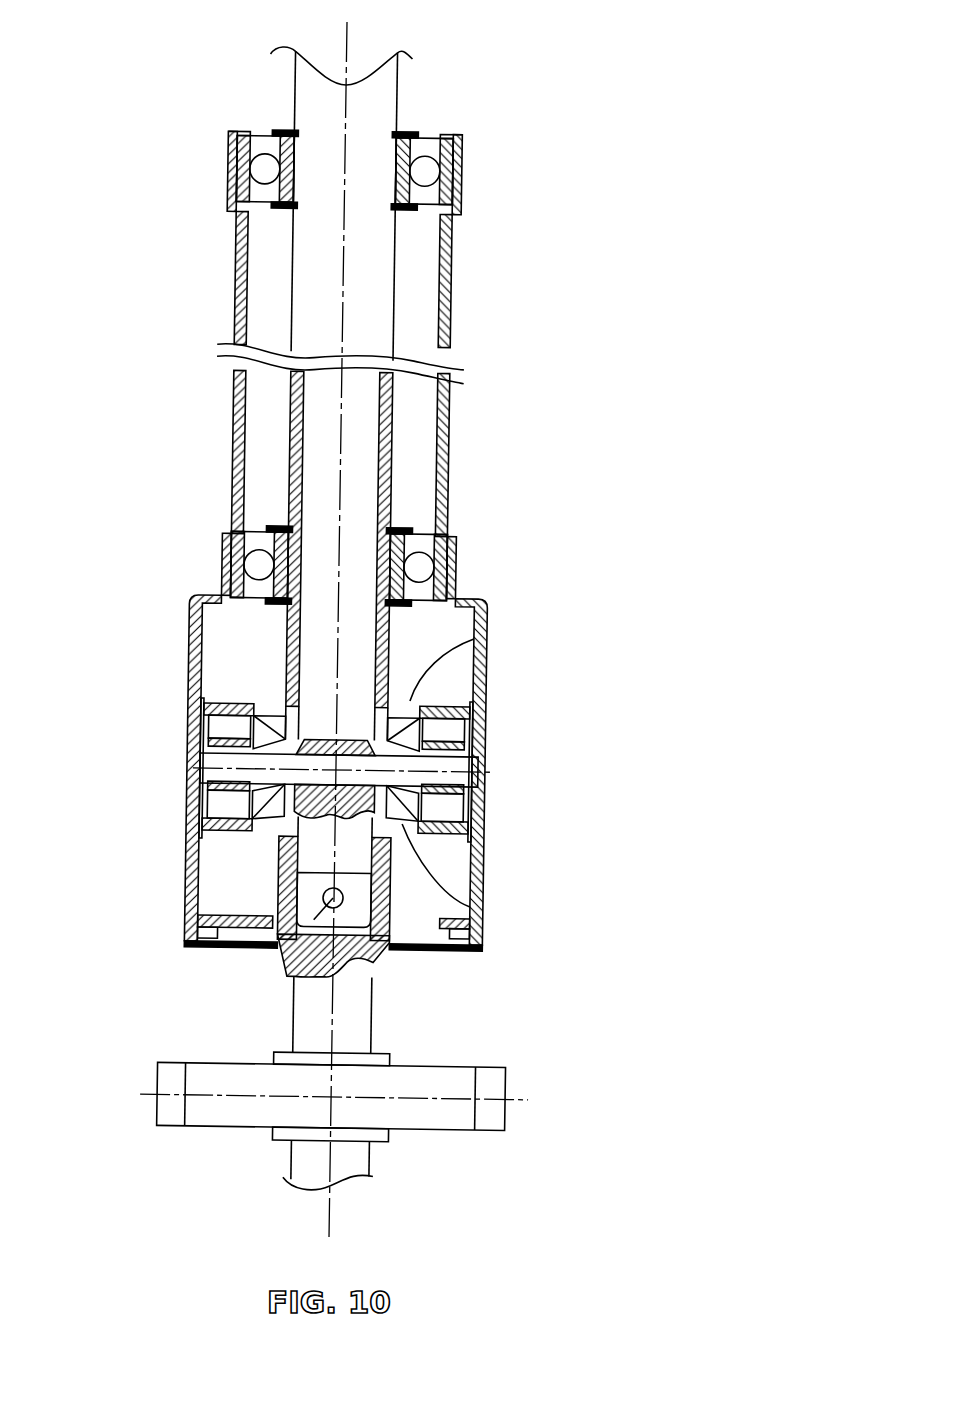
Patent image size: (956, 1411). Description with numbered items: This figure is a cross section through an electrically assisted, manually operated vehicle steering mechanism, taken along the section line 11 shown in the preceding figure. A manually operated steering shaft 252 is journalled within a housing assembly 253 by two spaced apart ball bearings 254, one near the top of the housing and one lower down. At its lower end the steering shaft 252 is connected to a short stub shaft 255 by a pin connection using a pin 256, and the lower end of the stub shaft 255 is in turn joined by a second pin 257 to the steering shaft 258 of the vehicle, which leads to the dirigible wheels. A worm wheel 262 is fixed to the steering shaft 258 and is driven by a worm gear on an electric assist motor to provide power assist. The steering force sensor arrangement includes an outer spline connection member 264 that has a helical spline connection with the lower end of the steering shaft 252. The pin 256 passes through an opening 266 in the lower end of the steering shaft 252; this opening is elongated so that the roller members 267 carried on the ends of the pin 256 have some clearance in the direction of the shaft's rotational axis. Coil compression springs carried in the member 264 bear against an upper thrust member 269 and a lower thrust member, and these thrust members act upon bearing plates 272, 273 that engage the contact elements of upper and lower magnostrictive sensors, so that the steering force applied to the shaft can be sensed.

The section line 11 is at (530, 772).
The steering shaft 252 is at (389, 100).
The housing assembly 253 is at (444, 257).
The ball bearings 254 is at (416, 173).
The stub shaft 255 is at (284, 847).
The pin 256 is at (486, 788).
The pin 257 is at (285, 947).
The steering shaft of the vehicle 258 is at (378, 1157).
The worm wheel 262 is at (513, 1118).
The outer spline connection member 264 is at (474, 637).
The opening 266 is at (405, 823).
The roller members 267 is at (487, 800).
The upper thrust member 269 is at (478, 724).
The bearing plate 272 is at (441, 698).
The bearing plate 273 is at (444, 833).